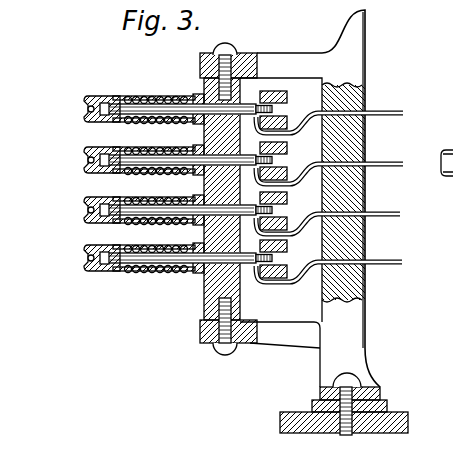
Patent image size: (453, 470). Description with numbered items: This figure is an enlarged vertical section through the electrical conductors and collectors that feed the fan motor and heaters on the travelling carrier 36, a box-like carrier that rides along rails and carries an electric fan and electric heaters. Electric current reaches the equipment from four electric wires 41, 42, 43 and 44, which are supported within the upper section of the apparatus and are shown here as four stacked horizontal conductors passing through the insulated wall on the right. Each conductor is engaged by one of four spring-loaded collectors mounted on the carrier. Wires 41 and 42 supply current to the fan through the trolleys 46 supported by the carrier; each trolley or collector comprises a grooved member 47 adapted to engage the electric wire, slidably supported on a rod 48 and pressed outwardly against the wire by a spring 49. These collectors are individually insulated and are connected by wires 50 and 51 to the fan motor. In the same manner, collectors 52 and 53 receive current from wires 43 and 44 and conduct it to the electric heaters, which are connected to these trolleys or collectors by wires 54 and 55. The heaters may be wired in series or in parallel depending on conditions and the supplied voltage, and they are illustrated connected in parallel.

The travelling carrier 36 is at (277, 425).
The electric wire 41 is at (103, 80).
The electric wire 42 is at (86, 160).
The electric wire 43 is at (86, 210).
The electric wire 44 is at (86, 258).
The trolley 46 is at (103, 82).
The grooved member 47 is at (165, 38).
The rod 48 is at (161, 109).
The spring 49 is at (144, 97).
The wire 50 is at (404, 114).
The wire 51 is at (402, 161).
The collector 52 is at (92, 222).
The collector 53 is at (93, 272).
The wire 54 is at (401, 214).
The wire 55 is at (403, 260).